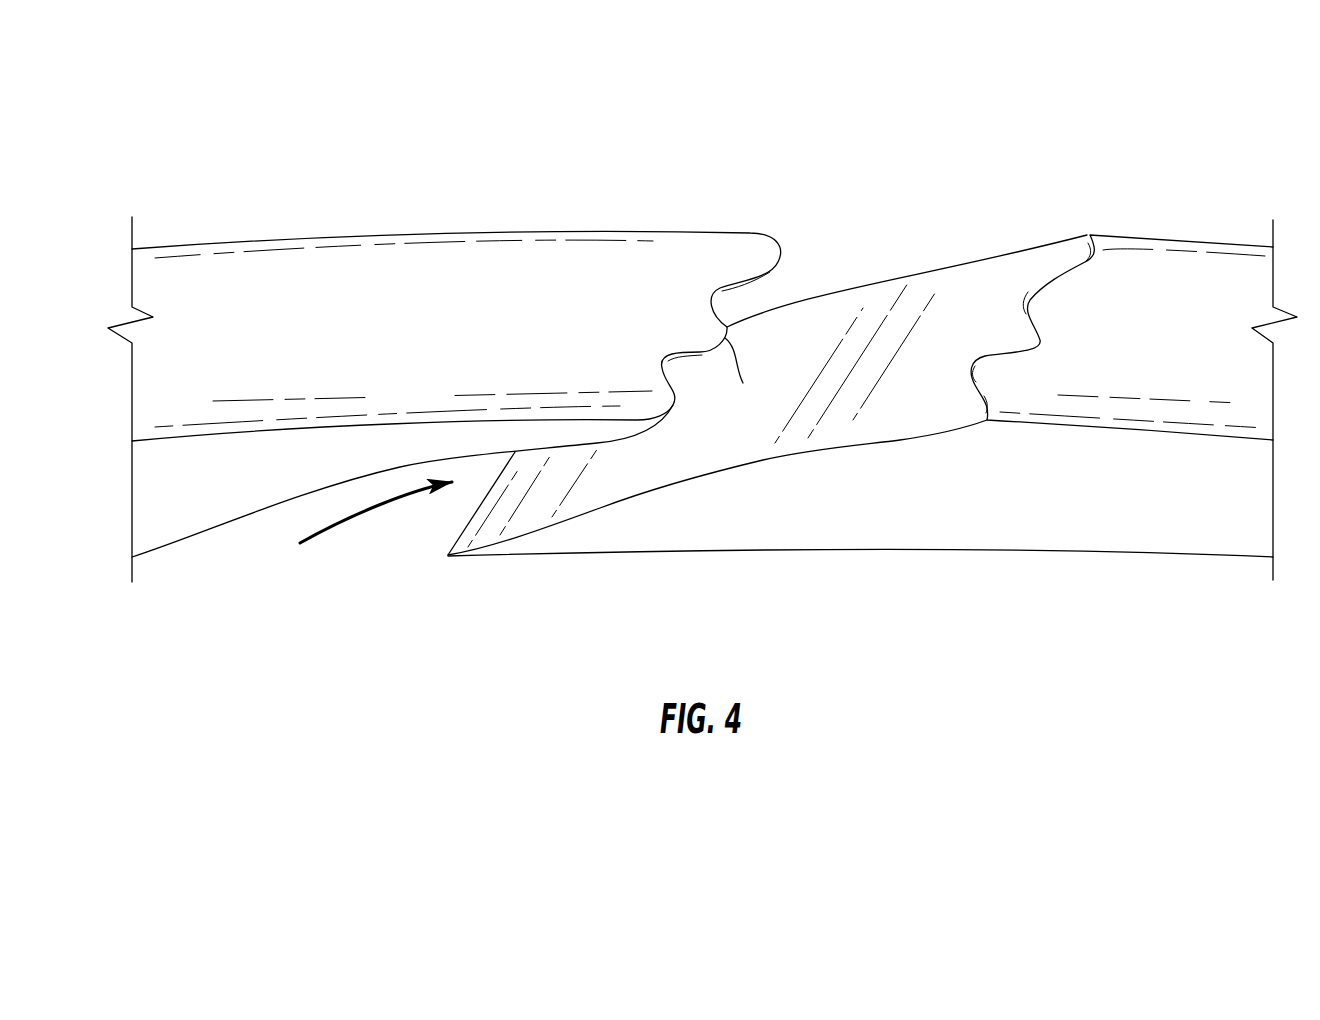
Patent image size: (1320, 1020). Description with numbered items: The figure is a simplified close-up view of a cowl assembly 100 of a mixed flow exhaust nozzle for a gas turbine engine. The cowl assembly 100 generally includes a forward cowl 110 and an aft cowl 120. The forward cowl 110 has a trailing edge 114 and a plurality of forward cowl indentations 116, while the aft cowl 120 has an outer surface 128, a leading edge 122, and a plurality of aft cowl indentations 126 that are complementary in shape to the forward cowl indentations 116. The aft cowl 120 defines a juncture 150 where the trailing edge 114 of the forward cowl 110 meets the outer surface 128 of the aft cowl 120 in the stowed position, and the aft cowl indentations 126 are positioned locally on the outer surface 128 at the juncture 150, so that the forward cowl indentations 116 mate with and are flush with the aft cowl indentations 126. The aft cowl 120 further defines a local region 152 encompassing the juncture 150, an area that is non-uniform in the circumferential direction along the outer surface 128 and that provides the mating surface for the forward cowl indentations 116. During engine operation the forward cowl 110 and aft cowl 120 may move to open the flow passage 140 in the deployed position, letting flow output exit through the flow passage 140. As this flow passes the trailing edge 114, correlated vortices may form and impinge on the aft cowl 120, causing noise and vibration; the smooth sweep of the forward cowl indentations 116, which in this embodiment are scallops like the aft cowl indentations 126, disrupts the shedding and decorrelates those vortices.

The cowl assembly 100 is at (702, 330).
The forward cowl 110 is at (398, 233).
The trailing edge 114 is at (735, 302).
The forward cowl indentations 116 is at (743, 383).
The aft cowl 120 is at (1000, 550).
The leading edge 122 is at (475, 510).
The aft cowl indentations 126 is at (993, 393).
The outer surface 128 is at (1173, 250).
The flow passage 140 is at (375, 538).
The juncture 150 is at (1020, 337).
The local region 152 is at (1023, 267).